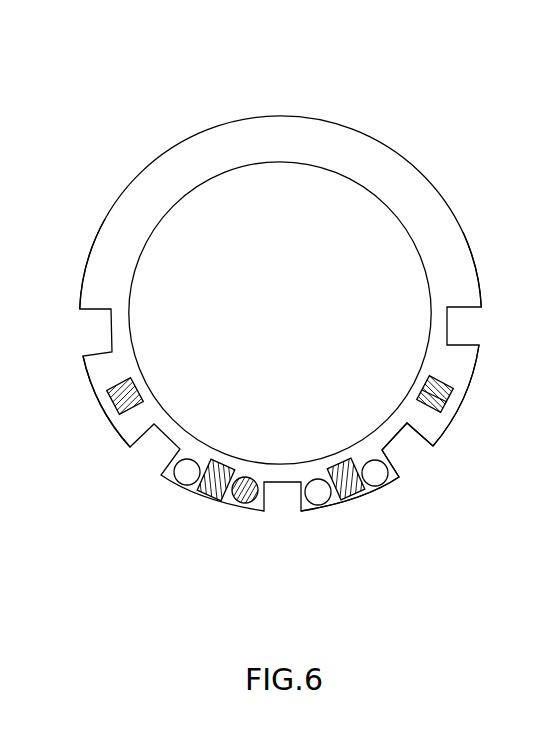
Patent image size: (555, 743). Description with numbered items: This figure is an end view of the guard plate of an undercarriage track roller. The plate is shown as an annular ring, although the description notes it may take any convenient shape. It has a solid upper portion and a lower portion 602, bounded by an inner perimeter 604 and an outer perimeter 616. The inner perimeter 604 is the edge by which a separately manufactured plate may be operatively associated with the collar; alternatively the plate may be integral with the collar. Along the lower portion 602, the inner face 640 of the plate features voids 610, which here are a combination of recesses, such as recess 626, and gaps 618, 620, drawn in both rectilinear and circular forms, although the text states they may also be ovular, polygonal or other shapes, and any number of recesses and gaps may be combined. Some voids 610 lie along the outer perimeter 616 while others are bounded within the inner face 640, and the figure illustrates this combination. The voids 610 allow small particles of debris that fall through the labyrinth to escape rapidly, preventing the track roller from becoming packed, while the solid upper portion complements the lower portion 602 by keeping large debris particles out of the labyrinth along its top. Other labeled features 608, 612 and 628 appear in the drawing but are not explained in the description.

The lower portion 602 is at (93, 380).
The inner perimeter 604 is at (398, 220).
The outer surface 608 is at (463, 232).
The voids 610 is at (107, 205).
The hatched rectangular insert 612 is at (213, 494).
The outer perimeter 616 is at (450, 393).
The gap 618 is at (395, 93).
The gap 620 is at (322, 505).
The recess 626 is at (245, 503).
The insert edge 628 is at (437, 397).
The inner face 640 is at (396, 478).